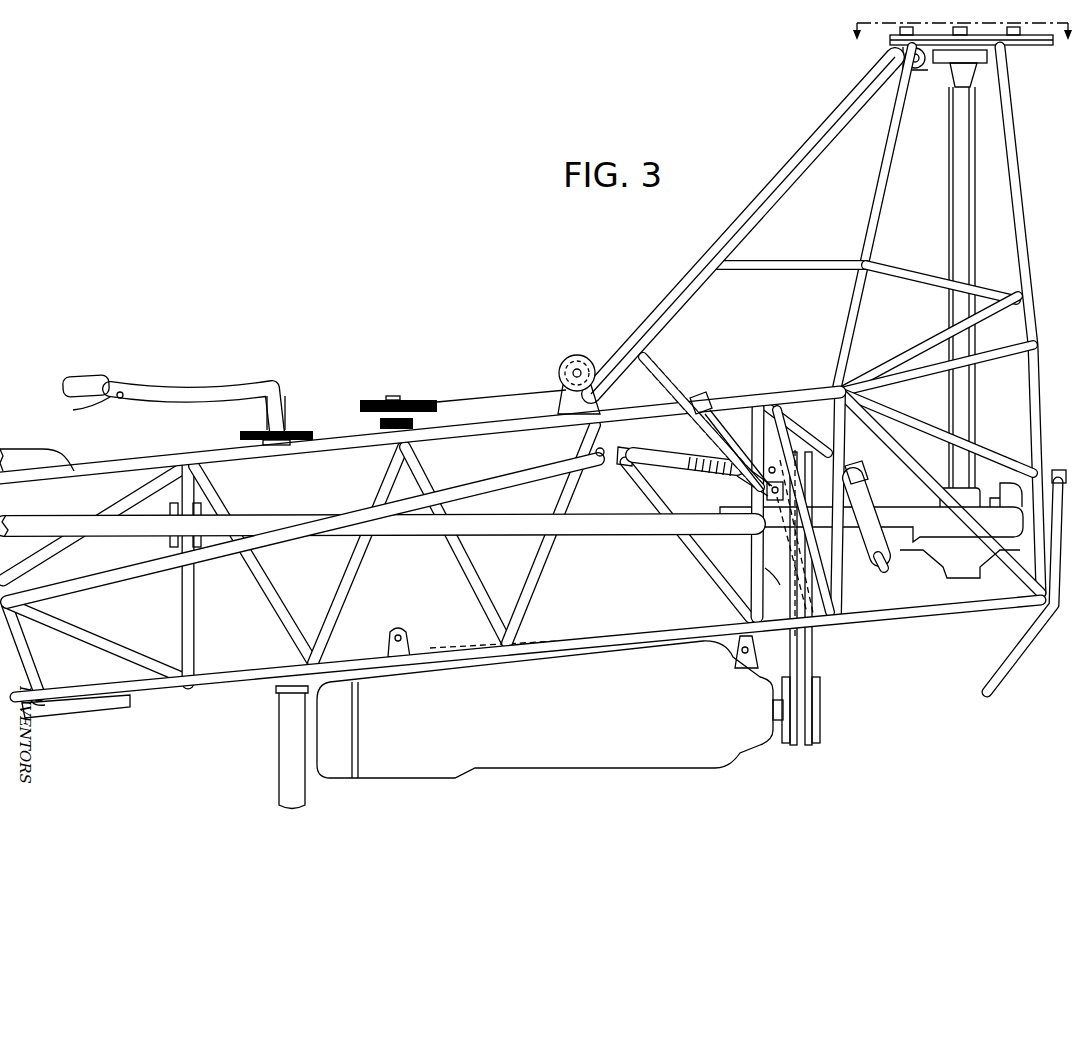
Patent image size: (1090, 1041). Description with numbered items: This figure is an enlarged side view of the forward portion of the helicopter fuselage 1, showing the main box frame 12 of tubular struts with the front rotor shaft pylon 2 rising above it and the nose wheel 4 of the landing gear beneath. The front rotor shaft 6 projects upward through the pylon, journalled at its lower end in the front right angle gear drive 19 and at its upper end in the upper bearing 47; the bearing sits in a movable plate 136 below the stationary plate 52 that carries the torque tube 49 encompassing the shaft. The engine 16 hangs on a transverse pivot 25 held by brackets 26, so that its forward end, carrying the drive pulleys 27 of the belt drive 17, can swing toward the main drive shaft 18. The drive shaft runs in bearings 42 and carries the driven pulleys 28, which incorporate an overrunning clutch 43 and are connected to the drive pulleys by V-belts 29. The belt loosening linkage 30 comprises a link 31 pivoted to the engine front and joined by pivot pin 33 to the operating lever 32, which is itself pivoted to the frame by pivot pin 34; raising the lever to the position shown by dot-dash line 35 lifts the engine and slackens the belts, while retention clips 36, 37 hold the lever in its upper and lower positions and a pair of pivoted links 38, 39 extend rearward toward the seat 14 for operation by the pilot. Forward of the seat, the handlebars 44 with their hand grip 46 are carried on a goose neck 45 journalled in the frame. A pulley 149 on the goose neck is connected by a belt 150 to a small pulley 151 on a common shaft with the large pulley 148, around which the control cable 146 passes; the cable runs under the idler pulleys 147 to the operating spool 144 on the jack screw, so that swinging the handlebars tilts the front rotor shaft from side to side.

The fuselage 1 is at (484, 299).
The front rotor shaft pylon 2 is at (802, 135).
The nose wheel 4 is at (1008, 681).
The front rotor shaft 6 is at (985, 232).
The main box frame 12 is at (183, 712).
The seat 14 is at (30, 451).
The engine 16 is at (598, 727).
The belt drive 17 is at (822, 645).
The main drive shaft 18 is at (618, 536).
The front right angle gear drive 19 is at (950, 557).
The pivot 25 is at (404, 630).
The brackets 26 is at (385, 643).
The drive pulleys 27 is at (822, 718).
The driven pulleys 28 is at (823, 557).
The V-belts 29 is at (797, 665).
The belt loosening linkage 30 is at (716, 478).
The link 31 is at (740, 640).
The operating lever 32 is at (702, 468).
The pivot pin 33 is at (768, 492).
The pivot pin 34 is at (780, 430).
The dot-dash line 35 is at (672, 371).
The retention clip 36 is at (712, 395).
The retention clip 37 is at (628, 447).
The pivoted link 38 is at (30, 668).
The pivoted link 39 is at (515, 470).
The bearings 42 is at (171, 504).
The overrunning clutch 43 is at (780, 574).
The handlebars 44 is at (170, 382).
The goose neck 45 is at (285, 412).
The hand grip 46 is at (103, 358).
The upper bearing 47 is at (990, 62).
The torque tube 49 is at (998, 45).
The plate 52 is at (893, 52).
The movable plate 136 is at (960, 86).
The operating spool 144 is at (948, 66).
The control cable 146 is at (790, 184).
The idler pulleys 147 is at (596, 333).
The large pulley 148 is at (405, 400).
The pulley 149 is at (244, 431).
The belt 150 is at (330, 420).
The small pulley 151 is at (428, 420).